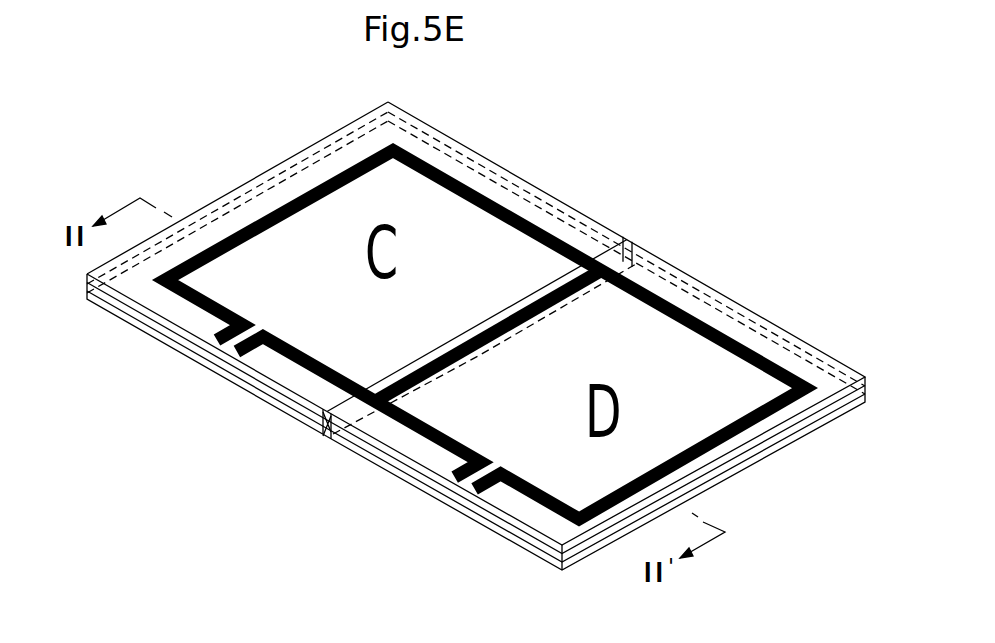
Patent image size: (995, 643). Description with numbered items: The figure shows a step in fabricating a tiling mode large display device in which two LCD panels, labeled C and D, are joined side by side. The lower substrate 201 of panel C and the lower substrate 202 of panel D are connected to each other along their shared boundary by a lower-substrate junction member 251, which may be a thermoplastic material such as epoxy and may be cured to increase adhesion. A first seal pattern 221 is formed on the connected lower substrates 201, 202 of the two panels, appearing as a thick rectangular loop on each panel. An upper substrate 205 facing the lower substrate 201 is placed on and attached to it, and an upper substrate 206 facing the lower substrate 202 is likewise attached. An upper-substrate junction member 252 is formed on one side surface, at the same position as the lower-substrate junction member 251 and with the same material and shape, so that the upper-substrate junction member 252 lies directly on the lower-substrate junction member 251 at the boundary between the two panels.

The lower substrate 201 is at (163, 337).
The lower substrate 202 is at (408, 475).
The upper substrate 205 is at (112, 296).
The upper substrate 206 is at (513, 527).
The first seal pattern 221 is at (487, 200).
The lower-substrate junction member 251 is at (318, 437).
The upper-substrate junction member 252 is at (320, 423).